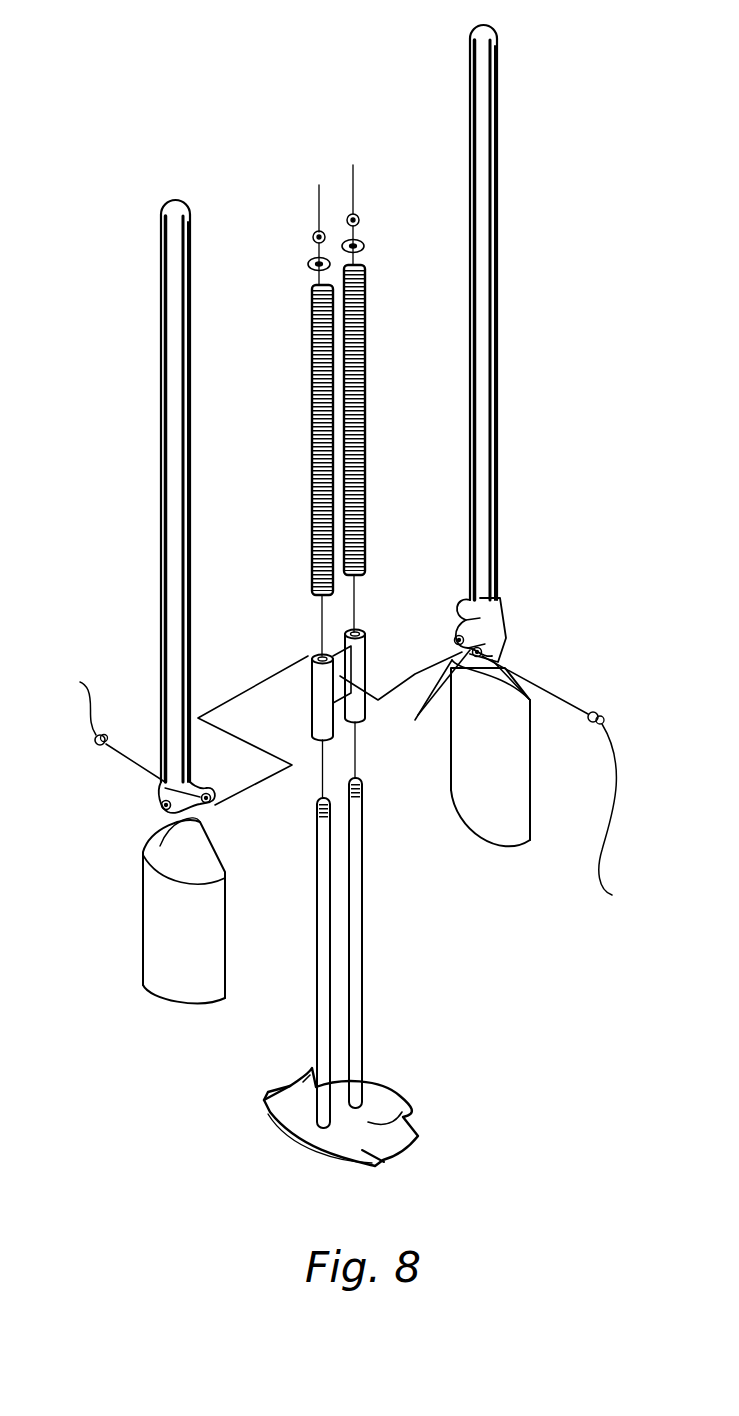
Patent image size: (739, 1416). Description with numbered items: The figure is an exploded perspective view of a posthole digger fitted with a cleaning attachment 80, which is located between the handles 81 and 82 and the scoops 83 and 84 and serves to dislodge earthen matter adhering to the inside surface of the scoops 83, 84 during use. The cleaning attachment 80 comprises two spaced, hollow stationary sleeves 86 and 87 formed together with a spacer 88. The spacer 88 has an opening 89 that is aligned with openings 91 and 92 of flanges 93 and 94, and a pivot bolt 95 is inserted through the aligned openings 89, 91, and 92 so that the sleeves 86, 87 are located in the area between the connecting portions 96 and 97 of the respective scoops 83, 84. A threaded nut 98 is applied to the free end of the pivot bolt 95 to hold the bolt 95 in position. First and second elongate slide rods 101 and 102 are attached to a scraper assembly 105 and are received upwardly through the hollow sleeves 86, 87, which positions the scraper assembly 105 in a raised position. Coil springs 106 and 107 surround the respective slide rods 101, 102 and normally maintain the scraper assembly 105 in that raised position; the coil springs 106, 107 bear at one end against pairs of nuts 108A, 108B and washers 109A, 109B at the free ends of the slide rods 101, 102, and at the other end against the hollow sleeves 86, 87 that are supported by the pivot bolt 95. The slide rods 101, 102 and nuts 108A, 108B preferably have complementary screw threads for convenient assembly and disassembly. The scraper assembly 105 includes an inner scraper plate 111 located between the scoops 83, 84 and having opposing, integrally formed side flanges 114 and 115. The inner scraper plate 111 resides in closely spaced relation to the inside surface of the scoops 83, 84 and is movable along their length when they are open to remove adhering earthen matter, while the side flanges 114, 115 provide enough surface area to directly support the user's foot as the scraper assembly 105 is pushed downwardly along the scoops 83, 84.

The cleaning attachment 80 is at (410, 309).
The handle 81 is at (172, 527).
The handle 82 is at (480, 405).
The scoop 83 is at (190, 995).
The scoop 84 is at (495, 798).
The hollow stationary sleeve 86 is at (316, 692).
The hollow stationary sleeve 87 is at (362, 672).
The spacer 88 is at (343, 652).
The opening 89 is at (343, 690).
The opening 91 is at (162, 838).
The opening 92 is at (469, 701).
The flange 93 is at (160, 800).
The flange 94 is at (487, 620).
The pivot bolt 95 is at (566, 781).
The connecting portion 96 is at (160, 812).
The connecting portion 97 is at (497, 642).
The threaded nut 98 is at (110, 725).
The first elongate slide rod 101 is at (325, 925).
The second elongate slide rod 102 is at (355, 875).
The scraper assembly 105 is at (329, 1151).
The coil spring 106 is at (316, 392).
The coil spring 107 is at (362, 395).
The nut 108A is at (315, 232).
The nut 108B is at (358, 217).
The washer 109A is at (307, 264).
The washer 109B is at (364, 246).
The inner scraper plate 111 is at (375, 1110).
The side flange 114 is at (290, 1083).
The side flange 115 is at (380, 1160).